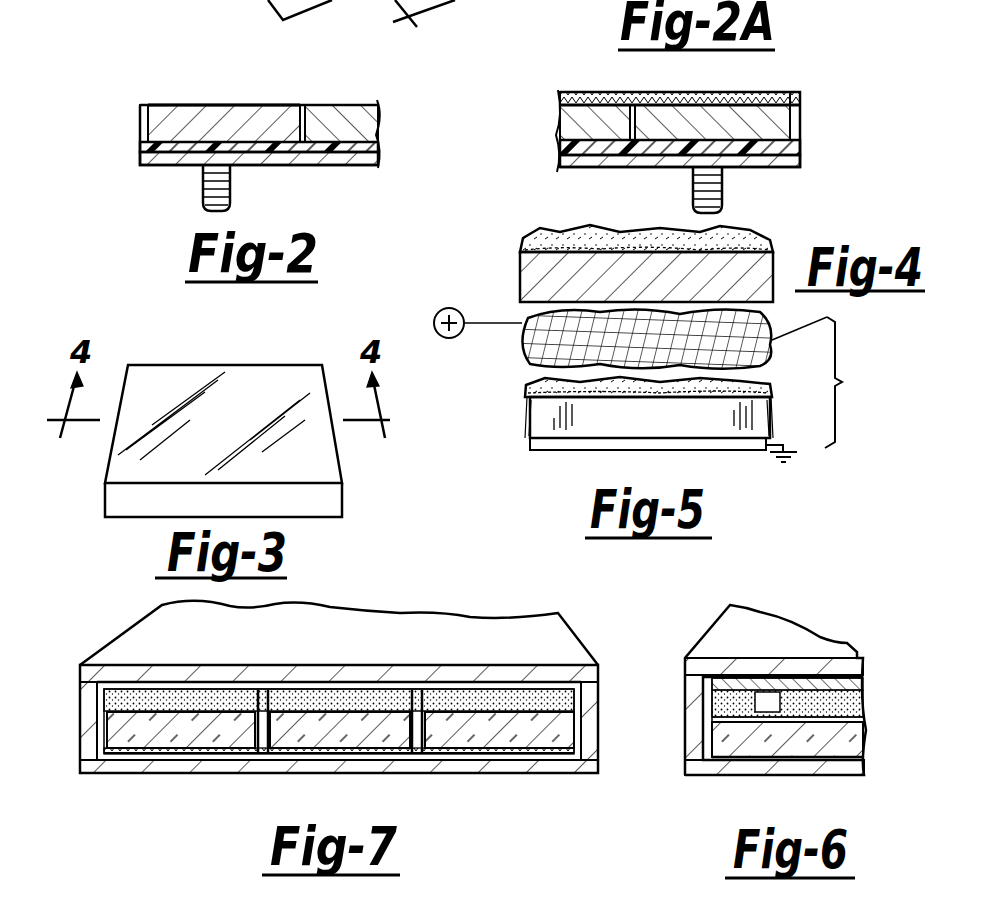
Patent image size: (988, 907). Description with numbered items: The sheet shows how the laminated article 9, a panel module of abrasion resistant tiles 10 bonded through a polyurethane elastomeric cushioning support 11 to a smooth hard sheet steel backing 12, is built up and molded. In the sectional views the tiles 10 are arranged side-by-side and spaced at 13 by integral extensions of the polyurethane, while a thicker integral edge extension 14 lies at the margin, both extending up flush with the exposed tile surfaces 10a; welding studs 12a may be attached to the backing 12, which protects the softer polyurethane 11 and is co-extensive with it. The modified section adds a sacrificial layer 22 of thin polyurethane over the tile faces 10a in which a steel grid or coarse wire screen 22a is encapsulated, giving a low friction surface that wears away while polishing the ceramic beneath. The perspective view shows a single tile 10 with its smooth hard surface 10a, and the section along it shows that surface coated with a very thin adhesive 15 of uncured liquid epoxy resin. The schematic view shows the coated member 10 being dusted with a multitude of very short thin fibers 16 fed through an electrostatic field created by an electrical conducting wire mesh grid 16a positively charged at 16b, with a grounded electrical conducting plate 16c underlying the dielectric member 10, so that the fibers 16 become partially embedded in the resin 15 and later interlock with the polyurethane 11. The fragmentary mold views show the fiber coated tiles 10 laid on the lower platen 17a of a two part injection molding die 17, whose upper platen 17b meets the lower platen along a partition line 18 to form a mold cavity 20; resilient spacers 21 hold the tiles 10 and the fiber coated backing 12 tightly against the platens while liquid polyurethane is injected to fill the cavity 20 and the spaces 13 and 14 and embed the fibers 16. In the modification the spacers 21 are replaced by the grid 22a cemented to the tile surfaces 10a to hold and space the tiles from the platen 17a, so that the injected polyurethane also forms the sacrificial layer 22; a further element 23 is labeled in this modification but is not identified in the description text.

In FIG. 2, the laminated article 9 is at (136, 125).
In FIG. 2A, the abrasion resistant tile 10 is at (770, 128).
In FIG. 2, the abrasion resistant tile 10 is at (222, 125).
In FIG. 3, the abrasion resistant tile 10 is at (245, 424).
In FIG. 4, the abrasion resistant tile 10 is at (700, 288).
In FIG. 7, the abrasion resistant tile 10 is at (207, 745).
In FIG. 6, the abrasion resistant tile 10 is at (848, 742).
In FIG. 2, the exposed tile surface 10a is at (201, 105).
In FIG. 6, the exposed tile surface 10a is at (823, 757).
In FIG. 2, the polyurethane elastomeric cushioning support 11 is at (143, 165).
In FIG. 2A, the sheet steel backing 12 is at (770, 172).
In FIG. 2, the sheet steel backing 12 is at (300, 163).
In FIG. 5, the sheet steel backing 12 is at (650, 417).
In FIG. 7, the sheet steel backing 12 is at (542, 675).
In FIG. 6, the sheet steel backing 12 is at (840, 683).
In FIG. 2A, the welding stud 12a is at (693, 190).
In FIG. 2, the welding stud 12a is at (203, 193).
In FIG. 2A, the space between tiles 13 is at (635, 112).
In FIG. 2, the space between tiles 13 is at (305, 115).
In FIG. 7, the space between tiles 13 is at (418, 732).
In FIG. 2, the integral edge extension 14 is at (146, 105).
In FIG. 7, the integral edge extension 14 is at (115, 756).
In FIG. 6, the integral edge extension 14 is at (707, 740).
In FIG. 4, the adhesive epoxy resin layer 15 is at (520, 262).
In FIG. 5, the adhesive epoxy resin layer 15 is at (525, 396).
In FIG. 5, the fibers 16 is at (545, 383).
In FIG. 7, the fibers 16 is at (402, 692).
In FIG. 6, the fibers 16 is at (848, 702).
In FIG. 5, the electrical conducting wire mesh grid 16a is at (829, 376).
In FIG. 5, the positive charge 16b is at (468, 290).
In FIG. 5, the grounded electrical conducting plate 16c is at (535, 452).
In FIG. 7, the two part injection molding die 17 is at (456, 580).
In FIG. 6, the two part injection molding die 17 is at (812, 616).
In FIG. 7, the lower platen 17a is at (400, 770).
In FIG. 6, the lower platen 17a is at (712, 778).
In FIG. 7, the upper platen 17b is at (250, 648).
In FIG. 6, the upper platen 17b is at (715, 627).
In FIG. 7, the parting line 18 is at (102, 722).
In FIG. 6, the parting line 18 is at (707, 704).
In FIG. 7, the mold cavity 20 is at (95, 712).
In FIG. 6, the mold cavity 20 is at (705, 690).
In FIG. 6, the spacer 21 is at (765, 692).
In FIG. 2A, the sacrificial layer 22 is at (745, 97).
In FIG. 2A, the steel grid or coarse wire screen 22a is at (770, 102).
In FIG. 7, the steel grid or coarse wire screen 22a is at (118, 763).
In FIG. 7, the support sheet 23 is at (170, 762).